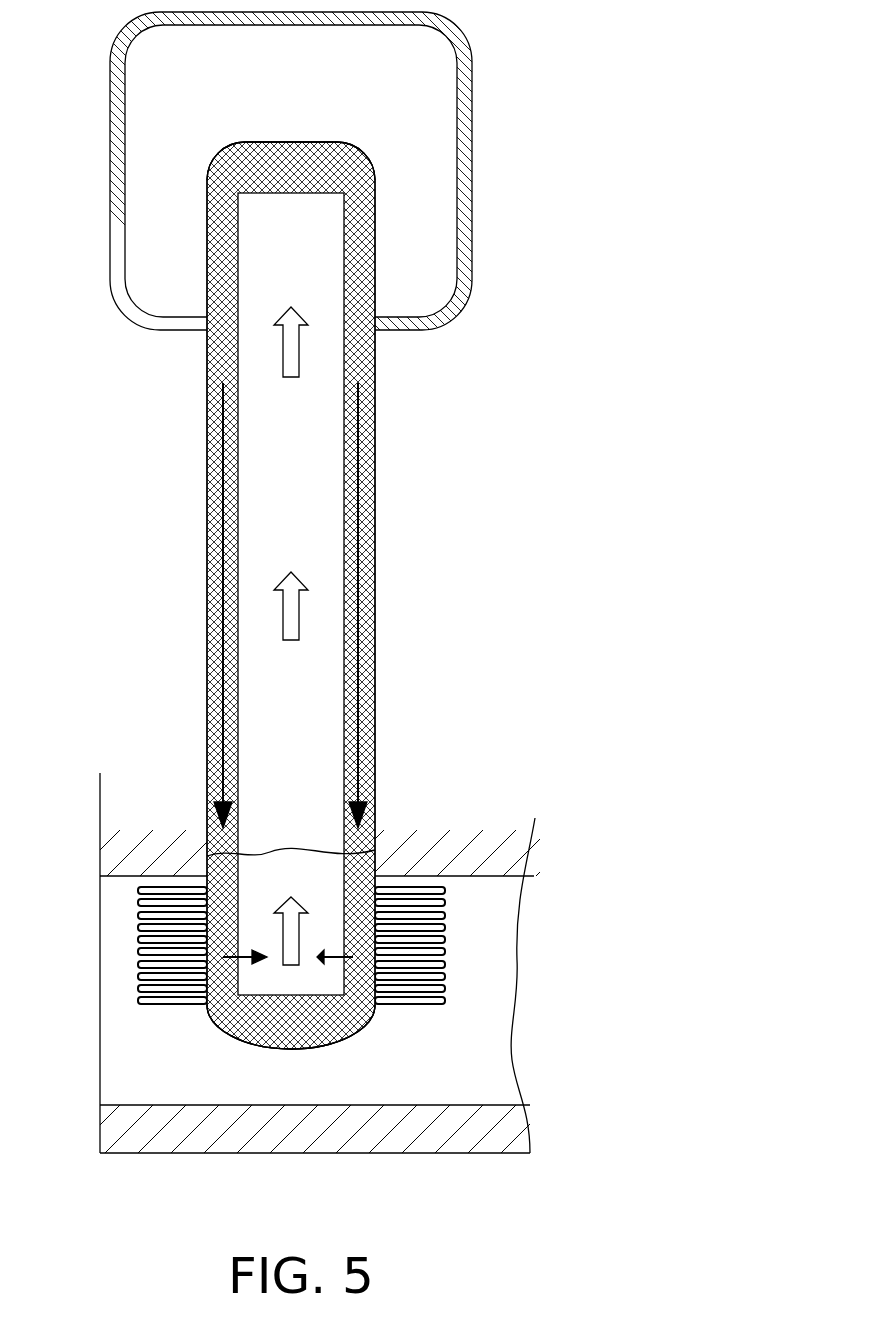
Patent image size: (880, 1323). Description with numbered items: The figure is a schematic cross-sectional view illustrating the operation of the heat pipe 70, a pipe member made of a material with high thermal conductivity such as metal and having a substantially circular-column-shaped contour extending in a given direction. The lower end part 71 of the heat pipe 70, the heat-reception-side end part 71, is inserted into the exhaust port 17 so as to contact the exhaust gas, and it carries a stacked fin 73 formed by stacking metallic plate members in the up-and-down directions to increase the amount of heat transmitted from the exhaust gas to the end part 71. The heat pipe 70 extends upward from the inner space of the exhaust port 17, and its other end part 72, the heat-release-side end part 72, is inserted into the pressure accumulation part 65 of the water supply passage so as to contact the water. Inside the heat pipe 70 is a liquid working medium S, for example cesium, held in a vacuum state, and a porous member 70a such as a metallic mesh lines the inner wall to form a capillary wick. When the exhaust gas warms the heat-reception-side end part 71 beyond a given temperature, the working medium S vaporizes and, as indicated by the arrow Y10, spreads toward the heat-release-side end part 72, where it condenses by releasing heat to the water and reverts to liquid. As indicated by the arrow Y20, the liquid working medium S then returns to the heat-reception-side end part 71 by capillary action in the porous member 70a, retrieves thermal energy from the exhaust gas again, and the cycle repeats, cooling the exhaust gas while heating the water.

The pressure accumulation part 65 is at (110, 155).
The heat-release-side end part 72 is at (313, 156).
The heat pipe 70 is at (207, 460).
The porous member 70a is at (375, 678).
The arrow Y10 is at (283, 597).
The arrow Y20 is at (207, 648).
The exhaust port 17 is at (470, 876).
The working medium S is at (270, 888).
The stacked fin 73 is at (138, 961).
The heat-reception-side end part 71 is at (271, 1040).